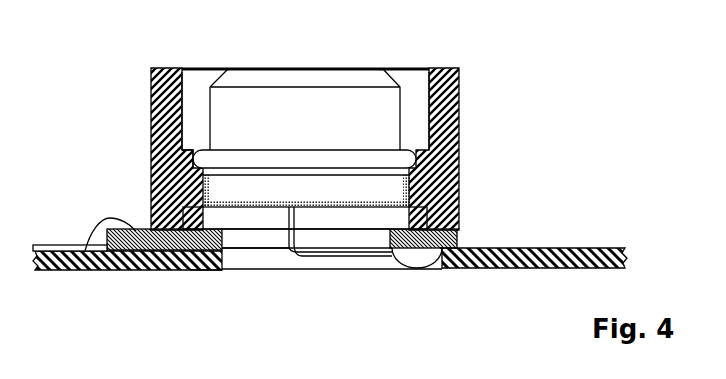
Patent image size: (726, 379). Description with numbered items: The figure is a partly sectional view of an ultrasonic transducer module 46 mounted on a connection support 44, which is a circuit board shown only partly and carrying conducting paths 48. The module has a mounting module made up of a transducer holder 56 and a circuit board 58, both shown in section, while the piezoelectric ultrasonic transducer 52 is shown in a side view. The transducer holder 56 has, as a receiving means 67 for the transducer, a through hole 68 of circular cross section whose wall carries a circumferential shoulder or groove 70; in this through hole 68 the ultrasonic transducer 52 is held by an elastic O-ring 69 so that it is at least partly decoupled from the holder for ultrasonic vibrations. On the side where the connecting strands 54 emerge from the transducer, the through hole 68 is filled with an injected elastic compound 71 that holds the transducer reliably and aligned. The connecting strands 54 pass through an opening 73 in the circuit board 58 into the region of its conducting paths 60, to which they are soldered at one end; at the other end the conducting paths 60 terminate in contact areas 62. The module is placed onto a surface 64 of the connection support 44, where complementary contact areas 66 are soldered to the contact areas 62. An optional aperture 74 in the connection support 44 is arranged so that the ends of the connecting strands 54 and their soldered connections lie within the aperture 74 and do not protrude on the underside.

The connection support 44 is at (47, 271).
The ultrasonic transducer module 46 is at (497, 90).
The conducting paths 48 is at (45, 246).
The ultrasonic transducer 52 is at (250, 97).
The connecting strands 54 is at (295, 253).
The transducer holder 56 is at (150, 107).
The circuit board 58 is at (460, 233).
The conducting paths 60 is at (198, 269).
The contact areas 62 is at (127, 228).
The surface 64 is at (557, 248).
The complementary contact areas 66 is at (87, 252).
The receiving means 67 is at (450, 122).
The through hole 68 is at (420, 100).
The elastic O-ring 69 is at (192, 158).
The circumferential shoulder or groove 70 is at (418, 160).
The elastic compound 71 is at (360, 205).
The opening 73 is at (238, 262).
The aperture 74 is at (408, 277).